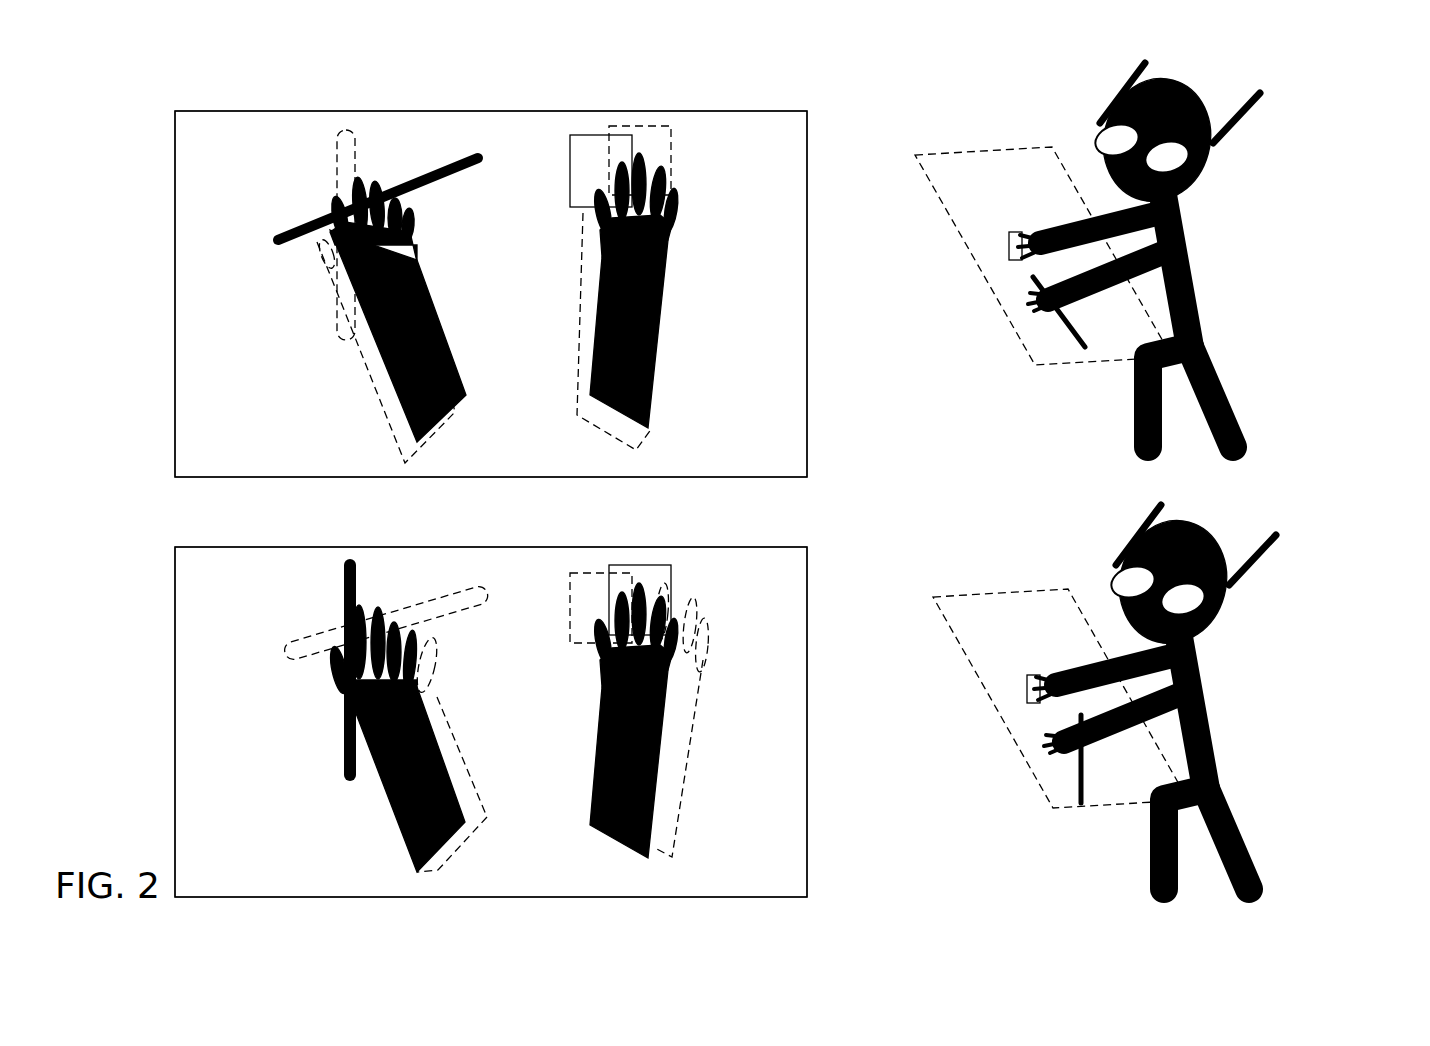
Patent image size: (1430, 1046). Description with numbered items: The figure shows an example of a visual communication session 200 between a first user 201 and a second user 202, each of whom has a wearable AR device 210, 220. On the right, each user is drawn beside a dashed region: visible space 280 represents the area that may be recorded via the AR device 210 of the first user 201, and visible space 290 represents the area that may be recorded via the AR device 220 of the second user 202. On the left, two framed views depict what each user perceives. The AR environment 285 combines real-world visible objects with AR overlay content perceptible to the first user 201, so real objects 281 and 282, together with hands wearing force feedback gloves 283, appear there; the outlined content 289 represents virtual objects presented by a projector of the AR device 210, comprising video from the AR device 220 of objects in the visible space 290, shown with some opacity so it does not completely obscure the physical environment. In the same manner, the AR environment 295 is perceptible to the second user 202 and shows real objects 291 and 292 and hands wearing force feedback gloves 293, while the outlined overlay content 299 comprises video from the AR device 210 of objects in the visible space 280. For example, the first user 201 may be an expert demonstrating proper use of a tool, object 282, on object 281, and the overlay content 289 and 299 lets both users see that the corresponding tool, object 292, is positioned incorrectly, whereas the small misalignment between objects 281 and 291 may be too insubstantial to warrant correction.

The visual communication session 200 is at (142, 73).
The first user 201 is at (1262, 440).
The second user 202 is at (1278, 885).
The wearable AR device 210 is at (1268, 97).
The wearable AR device 220 is at (1282, 538).
The visible space 280 is at (980, 153).
The real object 281 is at (590, 133).
The real object 282 is at (466, 163).
The hands wearing force feedback gloves 283 is at (590, 395).
The AR environment 285 is at (735, 110).
The outlined content 289 is at (615, 127).
The visible space 290 is at (995, 596).
The real object 291 is at (630, 565).
The real object 292 is at (350, 560).
The hands wearing force feedback gloves 293 is at (592, 788).
The AR environment 295 is at (807, 597).
The overlay content 299 is at (437, 678).